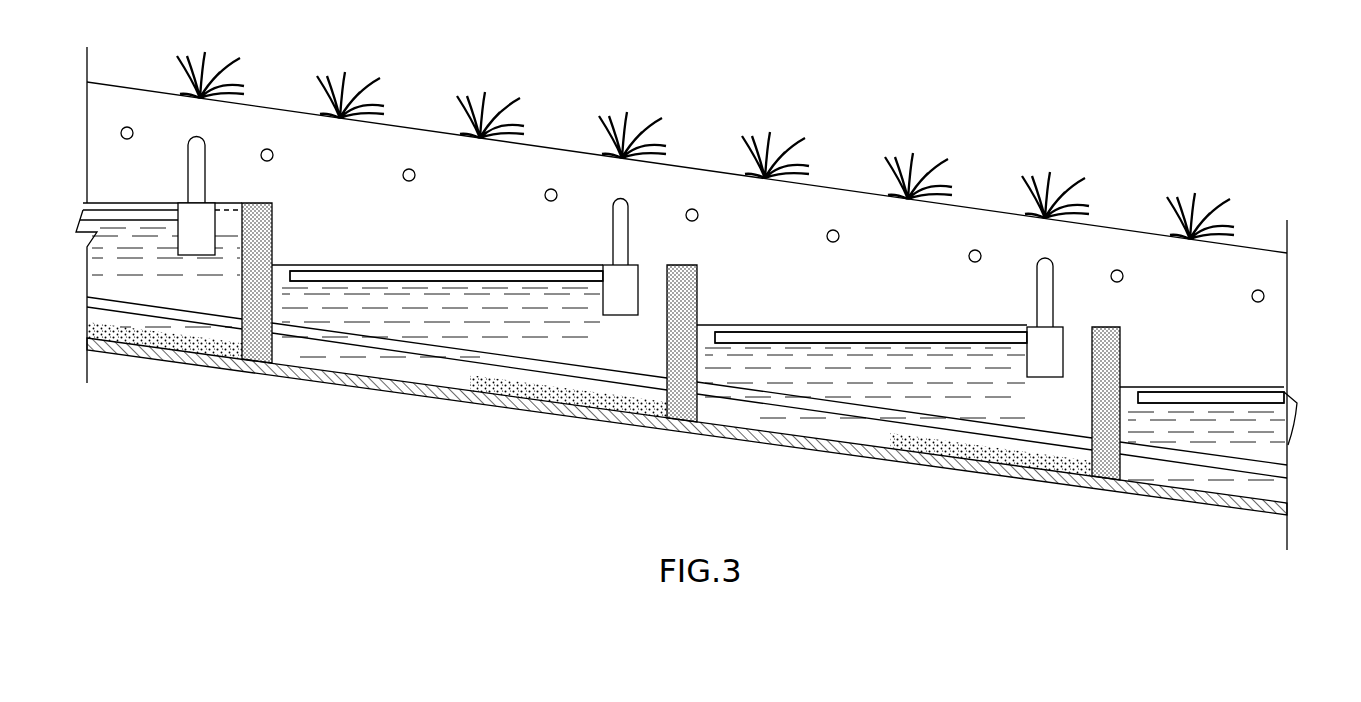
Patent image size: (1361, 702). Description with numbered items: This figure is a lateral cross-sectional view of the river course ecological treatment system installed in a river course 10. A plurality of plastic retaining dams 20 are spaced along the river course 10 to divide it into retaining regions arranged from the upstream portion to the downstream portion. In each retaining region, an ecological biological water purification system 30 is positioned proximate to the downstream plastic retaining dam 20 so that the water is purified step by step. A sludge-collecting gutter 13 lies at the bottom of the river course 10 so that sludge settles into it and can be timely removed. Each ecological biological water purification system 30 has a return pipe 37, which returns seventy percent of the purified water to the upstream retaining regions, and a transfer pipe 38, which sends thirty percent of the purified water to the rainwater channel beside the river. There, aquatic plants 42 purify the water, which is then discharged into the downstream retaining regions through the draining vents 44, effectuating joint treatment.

The river course 10 is at (1256, 437).
The sludge-collecting gutter 13 is at (217, 357).
The plastic retaining dam 20 is at (262, 360).
The ecological biological water purification system 30 is at (192, 243).
The return pipe 37 is at (428, 282).
The transfer pipe 38 is at (198, 153).
The aquatic plants 42 is at (343, 84).
The draining vents 44 is at (413, 171).